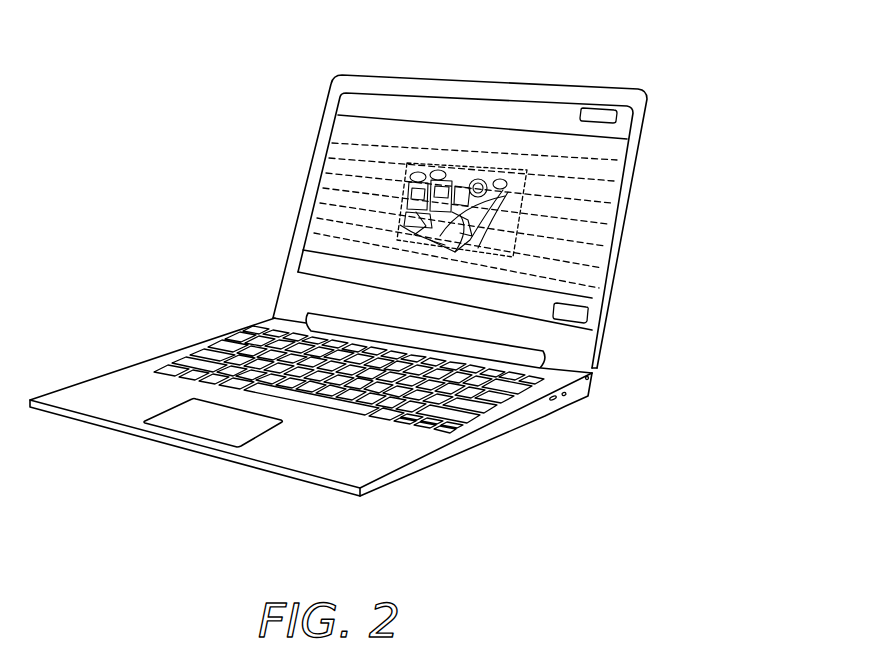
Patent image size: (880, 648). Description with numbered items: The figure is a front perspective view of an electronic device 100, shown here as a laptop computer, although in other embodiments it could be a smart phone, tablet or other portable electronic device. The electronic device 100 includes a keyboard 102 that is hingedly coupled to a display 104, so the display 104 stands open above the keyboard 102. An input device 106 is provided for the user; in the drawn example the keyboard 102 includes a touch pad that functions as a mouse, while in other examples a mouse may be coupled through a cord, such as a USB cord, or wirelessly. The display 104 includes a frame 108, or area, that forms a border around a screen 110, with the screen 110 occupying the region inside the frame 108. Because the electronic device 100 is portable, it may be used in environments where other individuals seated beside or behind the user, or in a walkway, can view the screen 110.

The electronic device 100 is at (667, 78).
The keyboard 102 is at (308, 448).
The display 104 is at (577, 257).
The input device 106 is at (207, 420).
The frame 108 is at (632, 178).
The screen 110 is at (479, 148).